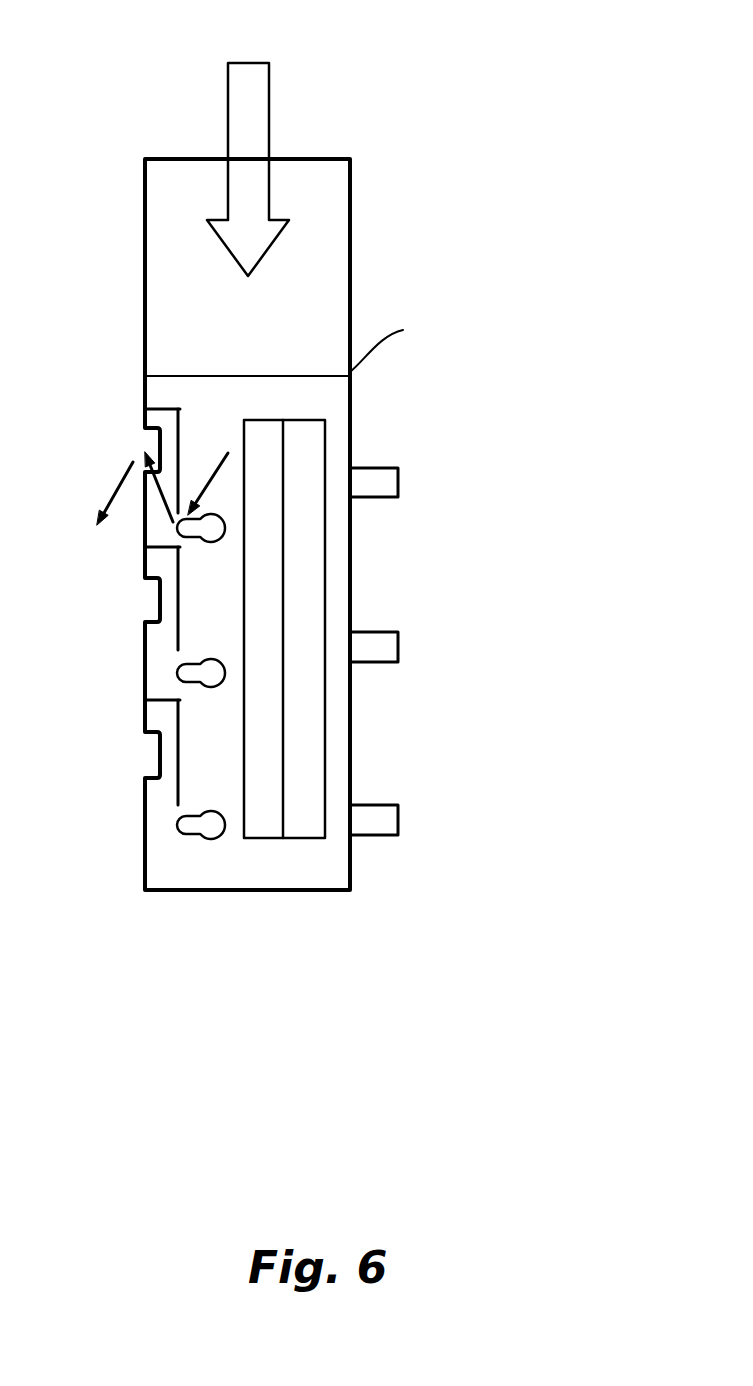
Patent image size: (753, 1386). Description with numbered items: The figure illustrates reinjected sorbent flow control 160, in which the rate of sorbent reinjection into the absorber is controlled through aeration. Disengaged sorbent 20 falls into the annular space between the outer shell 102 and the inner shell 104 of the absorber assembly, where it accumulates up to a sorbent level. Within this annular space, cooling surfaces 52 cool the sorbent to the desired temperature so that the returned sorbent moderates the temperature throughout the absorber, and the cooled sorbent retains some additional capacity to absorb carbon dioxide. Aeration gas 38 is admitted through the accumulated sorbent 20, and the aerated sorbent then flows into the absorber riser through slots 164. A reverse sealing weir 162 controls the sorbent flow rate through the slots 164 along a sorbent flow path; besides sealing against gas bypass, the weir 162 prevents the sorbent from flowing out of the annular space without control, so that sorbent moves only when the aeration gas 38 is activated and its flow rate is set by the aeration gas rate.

The disengaged sorbent 20 is at (248, 154).
The aeration gas 38 is at (201, 828).
The cooling surfaces 52 is at (274, 838).
The outer shell 102 is at (257, 524).
The inner shell 104 is at (146, 272).
The reinjected sorbent flow control 160 is at (349, 502).
The reverse sealing weir 162 is at (153, 405).
The slots 164 is at (157, 615).